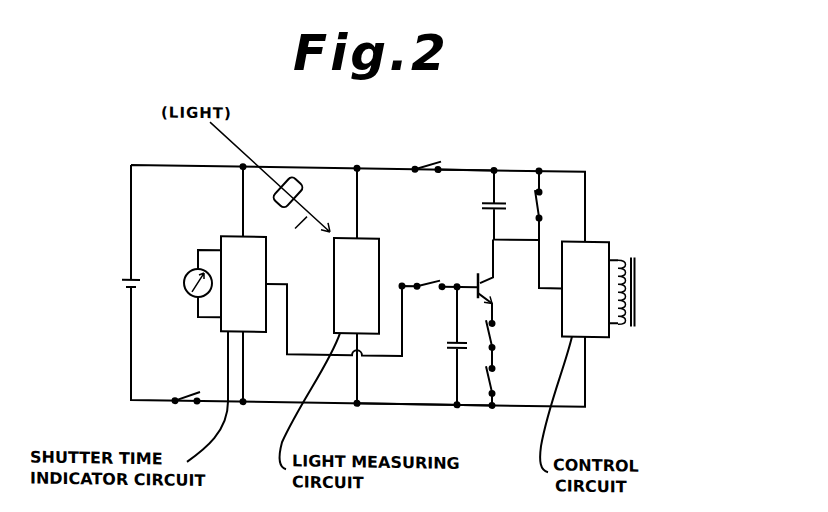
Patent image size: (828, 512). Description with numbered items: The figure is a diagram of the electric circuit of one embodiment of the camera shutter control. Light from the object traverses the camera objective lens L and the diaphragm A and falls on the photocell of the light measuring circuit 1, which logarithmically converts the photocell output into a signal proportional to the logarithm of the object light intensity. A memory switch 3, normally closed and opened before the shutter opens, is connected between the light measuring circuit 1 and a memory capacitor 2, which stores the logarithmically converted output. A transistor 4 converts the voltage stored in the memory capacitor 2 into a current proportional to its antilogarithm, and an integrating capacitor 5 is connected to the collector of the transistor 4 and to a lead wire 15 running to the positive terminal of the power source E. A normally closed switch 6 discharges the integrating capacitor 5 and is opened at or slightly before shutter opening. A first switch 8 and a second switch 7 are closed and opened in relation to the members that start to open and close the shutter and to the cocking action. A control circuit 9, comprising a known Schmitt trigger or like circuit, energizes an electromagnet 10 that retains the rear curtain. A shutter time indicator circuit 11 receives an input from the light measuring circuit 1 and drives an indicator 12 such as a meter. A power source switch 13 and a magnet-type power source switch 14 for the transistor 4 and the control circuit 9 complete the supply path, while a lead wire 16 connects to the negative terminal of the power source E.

The light measuring circuit 1 is at (334, 256).
The memory capacitor 2 is at (449, 349).
The memory switch 3 is at (433, 279).
The transistor 4 is at (476, 276).
The integrating capacitor 5 is at (481, 203).
The switch 6 is at (543, 201).
The second switch 7 is at (497, 372).
The first switch 8 is at (497, 328).
The control circuit 9 is at (595, 330).
The electromagnet 10 is at (624, 250).
The shutter time indicator circuit 11 is at (257, 330).
The indicator 12 is at (190, 271).
The power source switch 13 is at (186, 402).
The power source switch 14 is at (431, 161).
The lead wire 15 is at (466, 165).
The lead wire 16 is at (473, 401).
The power source E is at (121, 281).
The camera objective lens L is at (290, 178).
The diaphragm A is at (318, 198).